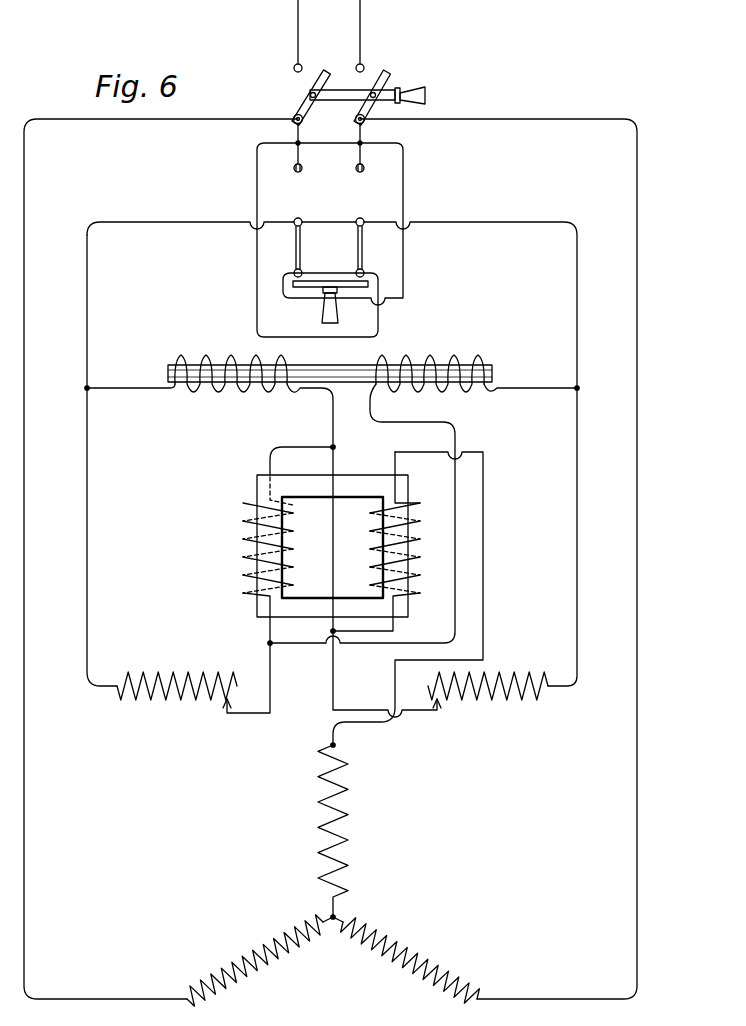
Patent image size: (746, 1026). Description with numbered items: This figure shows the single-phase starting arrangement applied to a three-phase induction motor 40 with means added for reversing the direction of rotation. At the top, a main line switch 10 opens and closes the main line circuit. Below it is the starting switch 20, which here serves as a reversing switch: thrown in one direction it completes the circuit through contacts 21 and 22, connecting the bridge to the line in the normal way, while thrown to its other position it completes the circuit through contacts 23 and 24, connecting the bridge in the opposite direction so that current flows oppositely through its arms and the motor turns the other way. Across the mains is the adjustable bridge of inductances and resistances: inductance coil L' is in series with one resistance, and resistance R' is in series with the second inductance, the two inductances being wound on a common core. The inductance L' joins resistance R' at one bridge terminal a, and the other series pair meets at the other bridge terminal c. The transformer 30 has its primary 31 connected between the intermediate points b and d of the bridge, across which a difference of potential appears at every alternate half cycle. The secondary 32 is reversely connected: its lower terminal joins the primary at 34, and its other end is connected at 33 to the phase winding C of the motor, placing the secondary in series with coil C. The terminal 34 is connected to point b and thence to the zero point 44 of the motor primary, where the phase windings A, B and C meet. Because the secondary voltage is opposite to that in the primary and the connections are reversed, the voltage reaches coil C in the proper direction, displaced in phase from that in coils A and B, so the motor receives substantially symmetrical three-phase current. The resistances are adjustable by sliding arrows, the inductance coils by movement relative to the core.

The main line switch 10 is at (292, 82).
The starting switch 20 is at (385, 203).
The contact 21 is at (295, 172).
The contact 22 is at (364, 168).
The contact 23 is at (300, 271).
The contact 24 is at (357, 271).
The transformer 30 is at (399, 488).
The primary 31 is at (246, 539).
The secondary 32 is at (412, 564).
The secondary terminal connection 33 is at (335, 745).
The terminal 34 is at (333, 447).
The induction motor 40 is at (289, 870).
The zero point 44 is at (335, 916).
The bridge terminal a is at (302, 219).
The intermediate point b is at (331, 631).
The bridge terminal c is at (358, 218).
The intermediate point d is at (268, 643).
The inductance coil L′ is at (231, 362).
The resistance R′ is at (177, 673).
The primary coil C is at (343, 831).
The primary coil B is at (255, 960).
The primary coil A is at (410, 960).